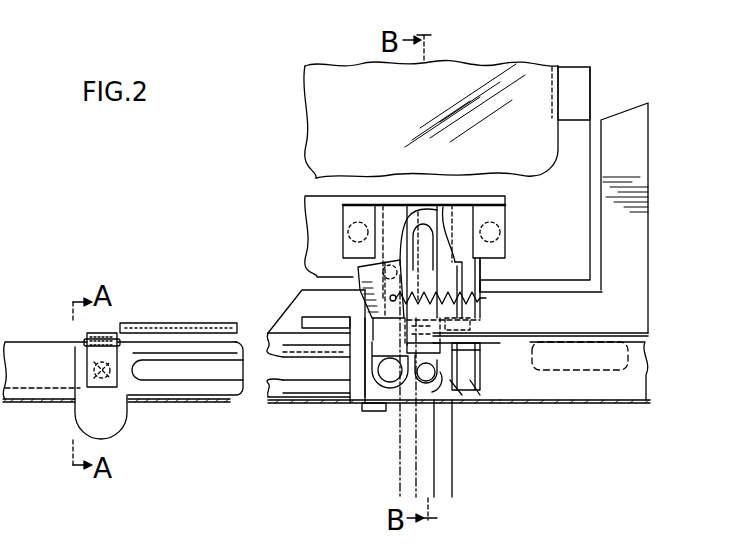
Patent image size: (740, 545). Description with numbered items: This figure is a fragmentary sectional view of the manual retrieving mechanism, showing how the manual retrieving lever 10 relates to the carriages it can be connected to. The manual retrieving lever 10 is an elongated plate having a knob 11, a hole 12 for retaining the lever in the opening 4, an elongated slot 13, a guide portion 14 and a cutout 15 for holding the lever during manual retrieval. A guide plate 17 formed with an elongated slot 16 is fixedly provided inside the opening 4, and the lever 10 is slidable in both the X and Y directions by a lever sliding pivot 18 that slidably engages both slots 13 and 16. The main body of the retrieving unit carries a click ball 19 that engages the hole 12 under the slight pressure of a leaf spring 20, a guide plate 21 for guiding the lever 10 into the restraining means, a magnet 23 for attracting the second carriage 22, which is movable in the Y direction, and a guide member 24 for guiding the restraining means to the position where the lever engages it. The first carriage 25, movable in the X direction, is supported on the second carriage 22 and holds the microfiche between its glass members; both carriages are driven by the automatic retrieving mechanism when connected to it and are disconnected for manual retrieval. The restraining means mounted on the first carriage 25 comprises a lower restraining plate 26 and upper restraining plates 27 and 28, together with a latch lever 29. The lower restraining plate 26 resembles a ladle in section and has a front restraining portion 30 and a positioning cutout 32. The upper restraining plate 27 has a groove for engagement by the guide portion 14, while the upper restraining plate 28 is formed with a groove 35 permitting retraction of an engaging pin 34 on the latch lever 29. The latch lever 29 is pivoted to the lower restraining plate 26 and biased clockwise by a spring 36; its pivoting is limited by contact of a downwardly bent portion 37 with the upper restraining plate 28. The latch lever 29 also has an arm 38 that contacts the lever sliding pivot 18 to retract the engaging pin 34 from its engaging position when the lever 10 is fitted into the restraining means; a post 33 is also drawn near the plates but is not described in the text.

The opening 4 is at (297, 405).
The manual retrieving lever 10 is at (203, 388).
The knob 11 is at (106, 418).
The hole 12 is at (82, 360).
The elongated slot 13 is at (422, 466).
The guide portion 14 is at (370, 411).
The cutout 15 is at (458, 311).
The elongated slot 16 is at (264, 326).
The guide plate 17 is at (269, 422).
The lever sliding pivot 18 is at (444, 374).
The click ball 19 is at (62, 386).
The leaf spring 20 is at (88, 343).
The guide plate 21 is at (471, 390).
The second carriage 22 is at (636, 242).
The magnet 23 is at (578, 372).
The guide member 24 is at (303, 324).
The first carriage 25 is at (580, 103).
The lower restraining plate 26 is at (496, 246).
The upper restraining plate 27 is at (448, 206).
The upper restraining plate 28 is at (377, 227).
The latch lever 29 is at (360, 303).
The front restraining portion 30 is at (395, 204).
The positioning cutout 32 is at (427, 397).
The post 33 is at (475, 270).
The engaging pin 34 is at (370, 196).
The groove 35 is at (427, 240).
The spring 36 is at (504, 219).
The downwardly bent portion 37 is at (357, 268).
The arm 38 is at (440, 349).